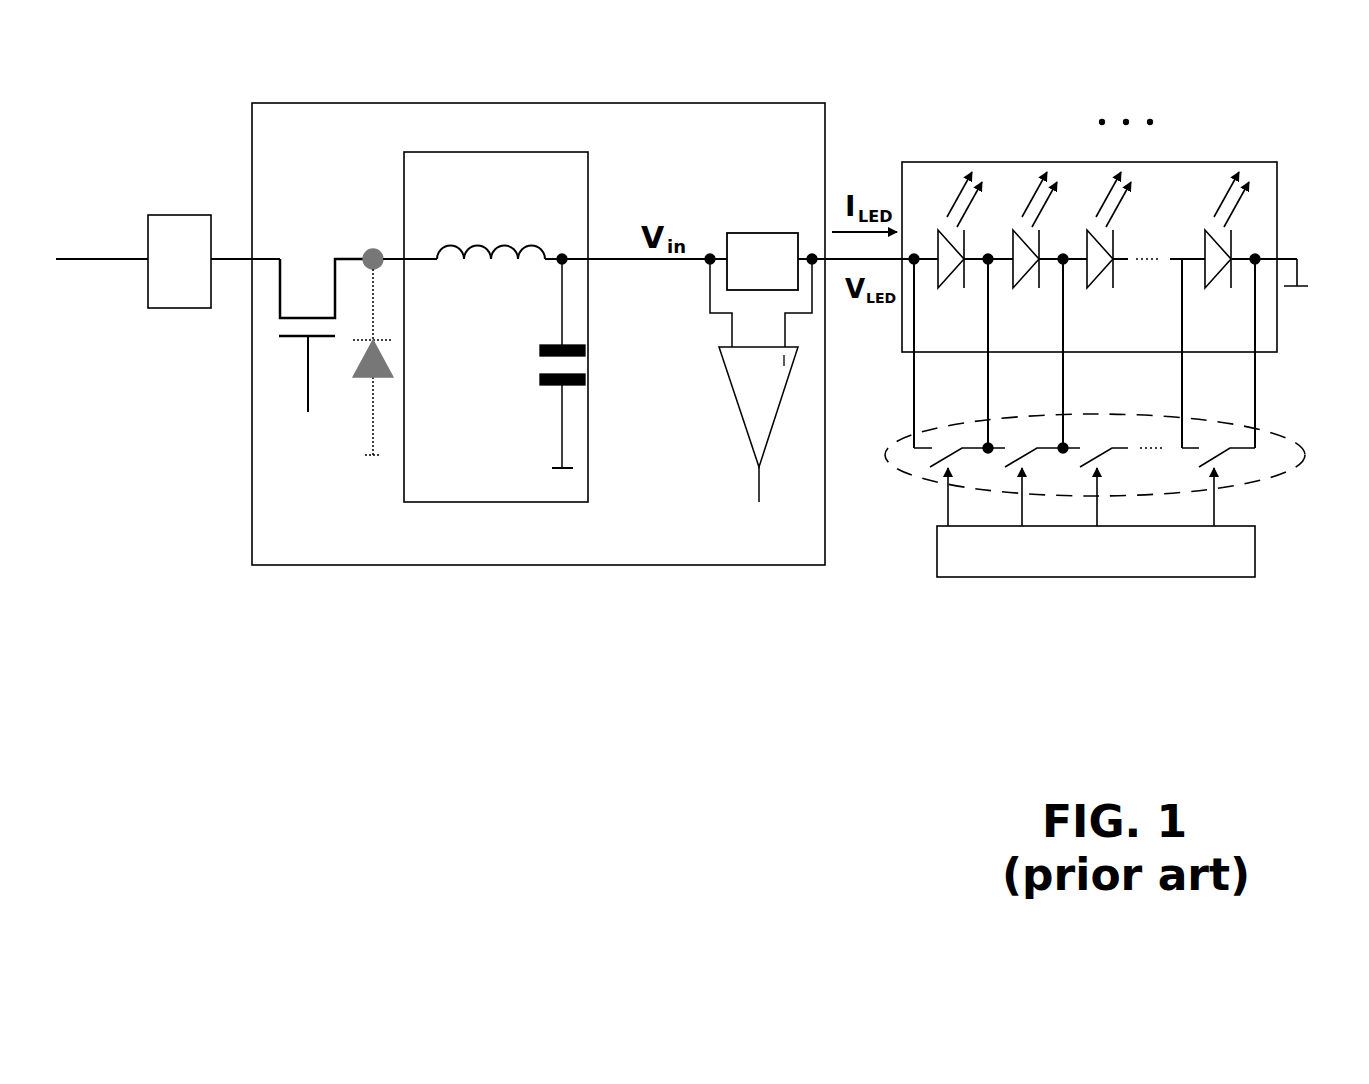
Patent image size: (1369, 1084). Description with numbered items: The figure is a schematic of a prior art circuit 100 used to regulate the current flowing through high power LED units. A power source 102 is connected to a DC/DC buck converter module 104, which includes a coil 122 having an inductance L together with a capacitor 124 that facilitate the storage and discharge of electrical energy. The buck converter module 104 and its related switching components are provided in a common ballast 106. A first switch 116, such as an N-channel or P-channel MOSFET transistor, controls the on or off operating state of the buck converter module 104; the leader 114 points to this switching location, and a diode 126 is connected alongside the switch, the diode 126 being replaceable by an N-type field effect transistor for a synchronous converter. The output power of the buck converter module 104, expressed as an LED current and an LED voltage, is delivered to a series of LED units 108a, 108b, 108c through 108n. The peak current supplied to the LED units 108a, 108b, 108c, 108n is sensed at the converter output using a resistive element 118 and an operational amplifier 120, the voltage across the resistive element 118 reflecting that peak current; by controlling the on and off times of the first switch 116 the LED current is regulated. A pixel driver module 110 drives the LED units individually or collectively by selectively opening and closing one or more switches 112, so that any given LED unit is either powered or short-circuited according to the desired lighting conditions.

The circuit 100 is at (312, 613).
The power source 102 is at (198, 273).
The DC/DC buck converter module 104 is at (502, 492).
The ballast 106 is at (350, 538).
The LED unit 108a is at (947, 217).
The LED unit 108b is at (1020, 217).
The LED unit 108c is at (1087, 217).
The LED unit 108n is at (1213, 217).
The pixel driver module 110 is at (1120, 558).
The switches 112 is at (1288, 467).
The switch 114 is at (312, 263).
The first switch 116 is at (328, 315).
The resistive element 118 is at (782, 274).
The operational amplifier 120 is at (776, 394).
The coil 122 is at (480, 257).
The capacitor 124 is at (538, 363).
The diode 126 is at (385, 395).